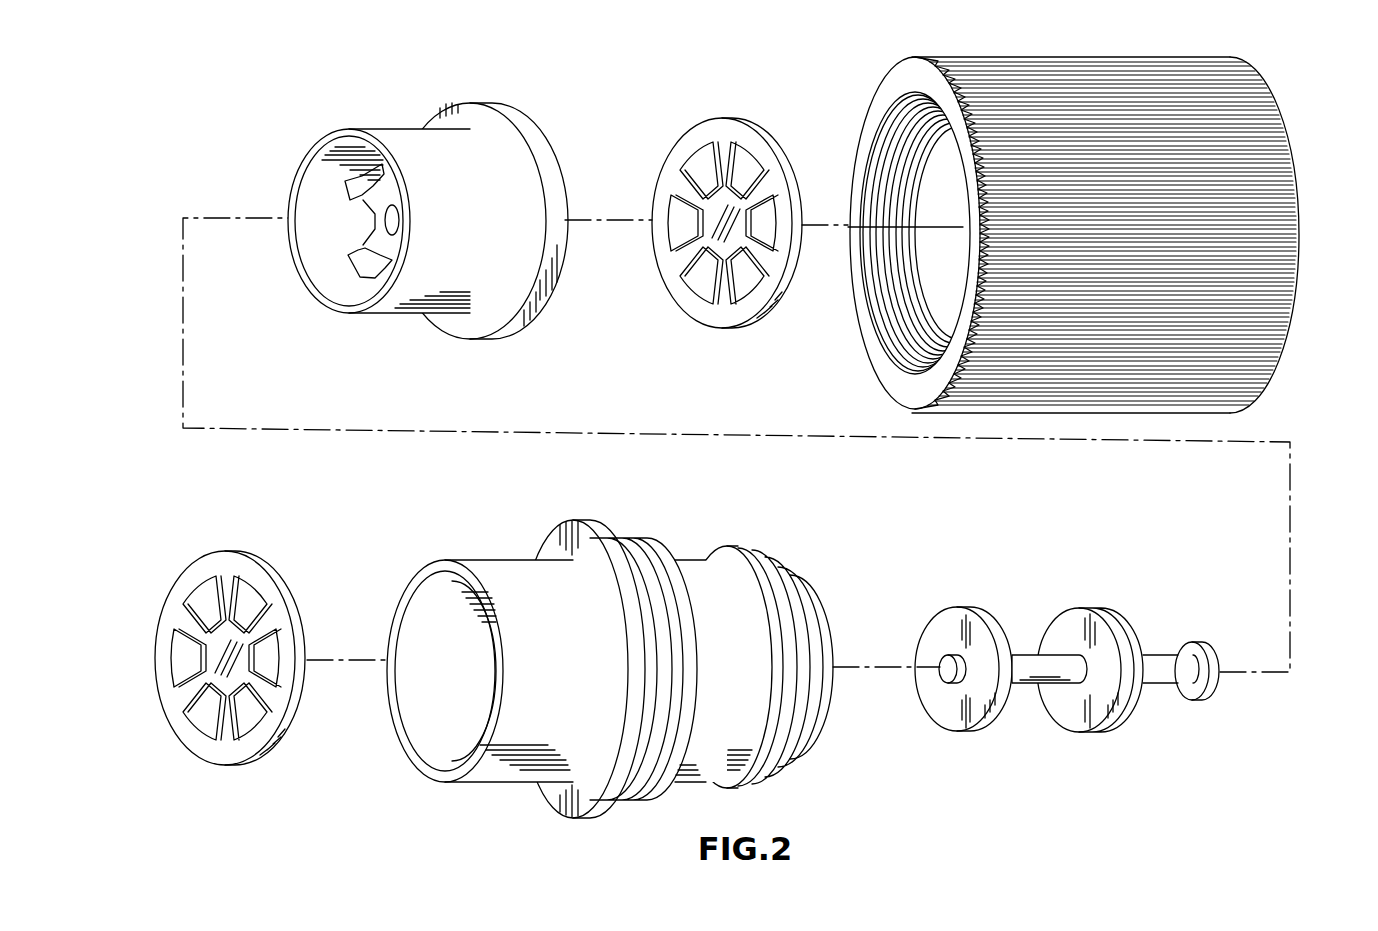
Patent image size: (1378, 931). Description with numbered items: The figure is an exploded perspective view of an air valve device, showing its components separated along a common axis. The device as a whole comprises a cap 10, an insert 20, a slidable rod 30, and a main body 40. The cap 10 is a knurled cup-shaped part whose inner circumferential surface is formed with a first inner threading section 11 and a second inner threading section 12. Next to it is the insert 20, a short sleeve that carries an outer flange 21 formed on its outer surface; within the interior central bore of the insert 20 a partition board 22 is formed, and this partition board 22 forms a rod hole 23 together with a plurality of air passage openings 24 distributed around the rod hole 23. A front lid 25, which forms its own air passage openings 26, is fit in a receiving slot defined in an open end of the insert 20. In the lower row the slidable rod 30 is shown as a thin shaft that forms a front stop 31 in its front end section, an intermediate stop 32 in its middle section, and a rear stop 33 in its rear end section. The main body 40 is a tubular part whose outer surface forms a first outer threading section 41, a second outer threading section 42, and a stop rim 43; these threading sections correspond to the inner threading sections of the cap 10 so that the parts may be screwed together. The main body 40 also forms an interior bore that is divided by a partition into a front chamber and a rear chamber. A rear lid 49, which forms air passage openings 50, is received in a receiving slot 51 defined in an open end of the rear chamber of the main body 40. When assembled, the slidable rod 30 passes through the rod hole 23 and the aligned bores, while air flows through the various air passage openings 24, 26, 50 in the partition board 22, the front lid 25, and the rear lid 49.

The cap 10 is at (1267, 187).
The first inner threading section 11 is at (888, 175).
The second inner threading section 12 is at (965, 205).
The insert 20 is at (417, 148).
The outer flange 21 is at (535, 150).
The partition board 22 is at (375, 207).
The rod hole 23 is at (383, 230).
The air passage openings 24 is at (378, 178).
The front lid 25 is at (738, 140).
The air passage openings 26 is at (688, 180).
The slidable rod 30 is at (1030, 667).
The front stop 31 is at (1207, 687).
The intermediate stop 32 is at (1100, 617).
The rear stop 33 is at (952, 630).
The main body 40 is at (505, 575).
The first outer threading section 41 is at (650, 555).
The second outer threading section 42 is at (748, 572).
The stop rim 43 is at (810, 715).
The rear lid 49 is at (222, 568).
The air passage openings 50 is at (245, 600).
The receiving slot 51 is at (418, 725).